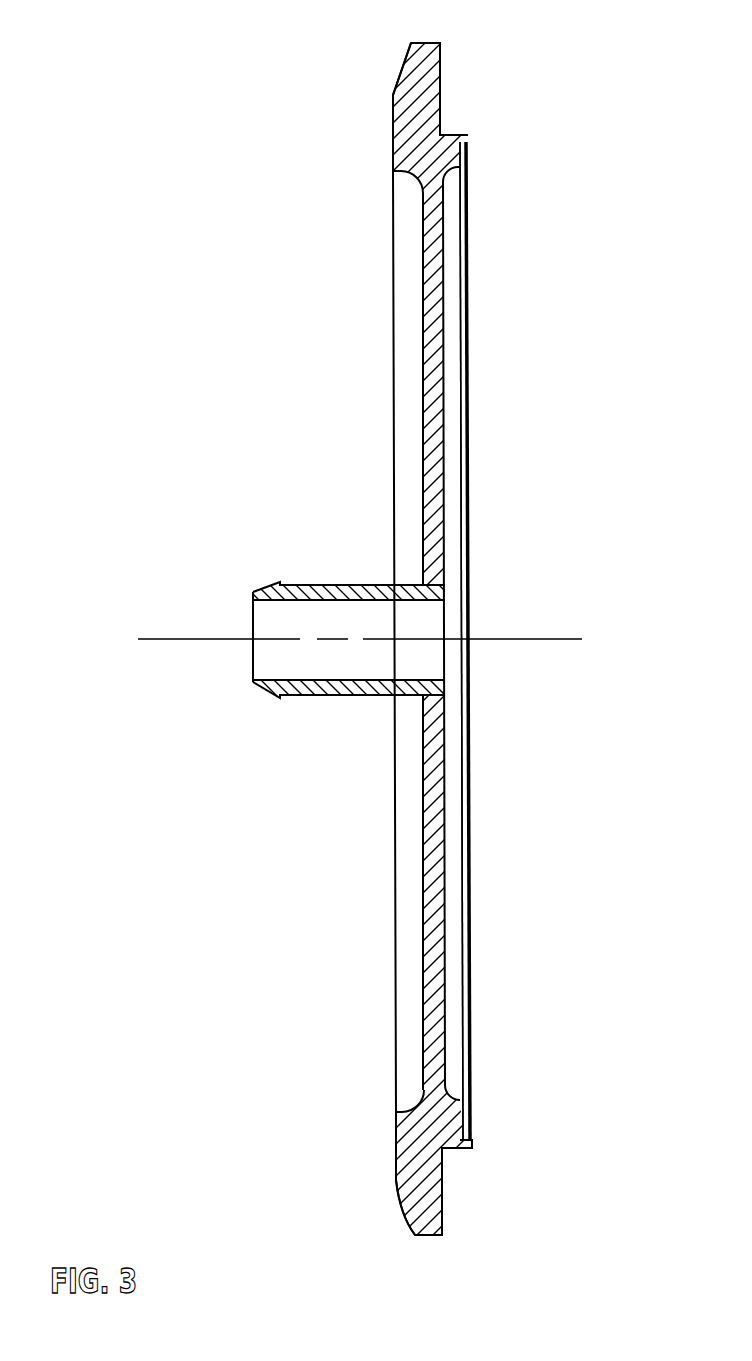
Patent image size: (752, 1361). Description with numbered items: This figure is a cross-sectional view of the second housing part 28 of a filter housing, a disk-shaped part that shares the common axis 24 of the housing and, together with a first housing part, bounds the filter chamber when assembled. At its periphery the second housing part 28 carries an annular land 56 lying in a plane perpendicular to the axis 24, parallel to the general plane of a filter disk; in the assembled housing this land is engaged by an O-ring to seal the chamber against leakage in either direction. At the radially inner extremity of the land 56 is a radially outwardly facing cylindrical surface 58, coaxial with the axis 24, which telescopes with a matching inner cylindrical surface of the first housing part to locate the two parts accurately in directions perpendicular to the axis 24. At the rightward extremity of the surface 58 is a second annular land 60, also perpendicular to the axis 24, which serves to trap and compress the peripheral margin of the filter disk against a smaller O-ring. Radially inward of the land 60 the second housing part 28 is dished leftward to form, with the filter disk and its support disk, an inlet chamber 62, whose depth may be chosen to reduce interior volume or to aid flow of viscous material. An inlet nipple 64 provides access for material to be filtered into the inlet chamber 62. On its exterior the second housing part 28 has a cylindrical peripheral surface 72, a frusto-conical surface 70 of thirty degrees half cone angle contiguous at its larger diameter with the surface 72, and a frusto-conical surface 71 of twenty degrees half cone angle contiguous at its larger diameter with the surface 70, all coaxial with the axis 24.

The axis 24 is at (533, 638).
The second housing part 28 is at (602, 155).
The annular land 56 is at (442, 83).
The radially outwardly facing cylindrical surface 58 is at (452, 133).
The annular land 60 is at (468, 136).
The inlet chamber 62 is at (452, 447).
The inlet nipple 64 is at (305, 586).
The frusto-conical surface 70 is at (410, 50).
The frusto-conical surface 71 is at (401, 73).
The cylindrical peripheral surface 72 is at (428, 1237).